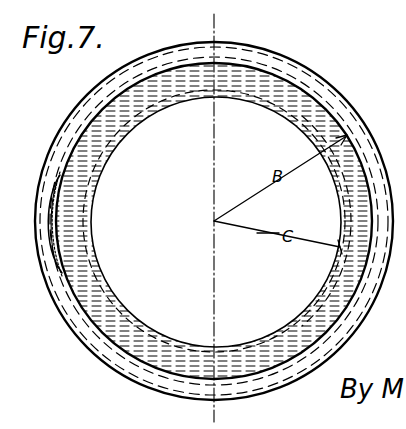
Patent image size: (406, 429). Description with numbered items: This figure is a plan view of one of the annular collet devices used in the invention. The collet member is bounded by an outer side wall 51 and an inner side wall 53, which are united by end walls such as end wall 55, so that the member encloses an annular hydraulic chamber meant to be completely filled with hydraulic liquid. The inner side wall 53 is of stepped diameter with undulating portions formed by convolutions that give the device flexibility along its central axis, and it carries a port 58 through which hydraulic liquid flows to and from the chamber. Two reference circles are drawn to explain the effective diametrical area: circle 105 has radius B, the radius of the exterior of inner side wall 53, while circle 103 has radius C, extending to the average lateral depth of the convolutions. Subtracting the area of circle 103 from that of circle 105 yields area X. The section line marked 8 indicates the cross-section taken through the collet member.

The outer side wall 51 is at (55, 311).
The end wall 55 is at (90, 100).
The circle having radius B 105 is at (322, 97).
The circle having radius C 103 is at (343, 212).
The inner side wall 53 is at (62, 177).
The port 58 is at (58, 248).
The section line 8- 8 is at (186, 23).